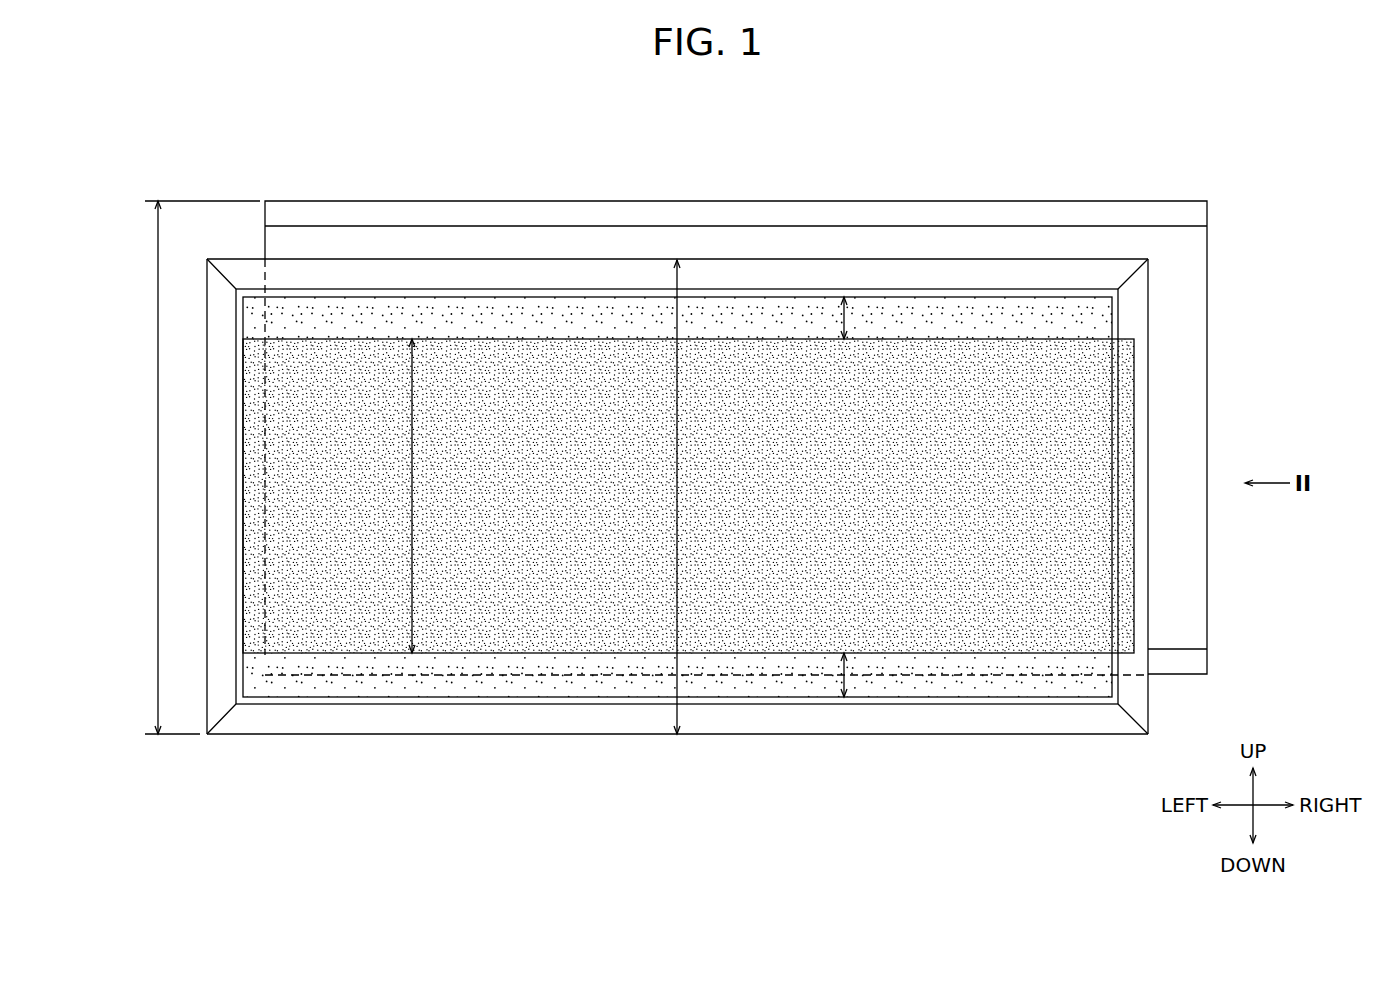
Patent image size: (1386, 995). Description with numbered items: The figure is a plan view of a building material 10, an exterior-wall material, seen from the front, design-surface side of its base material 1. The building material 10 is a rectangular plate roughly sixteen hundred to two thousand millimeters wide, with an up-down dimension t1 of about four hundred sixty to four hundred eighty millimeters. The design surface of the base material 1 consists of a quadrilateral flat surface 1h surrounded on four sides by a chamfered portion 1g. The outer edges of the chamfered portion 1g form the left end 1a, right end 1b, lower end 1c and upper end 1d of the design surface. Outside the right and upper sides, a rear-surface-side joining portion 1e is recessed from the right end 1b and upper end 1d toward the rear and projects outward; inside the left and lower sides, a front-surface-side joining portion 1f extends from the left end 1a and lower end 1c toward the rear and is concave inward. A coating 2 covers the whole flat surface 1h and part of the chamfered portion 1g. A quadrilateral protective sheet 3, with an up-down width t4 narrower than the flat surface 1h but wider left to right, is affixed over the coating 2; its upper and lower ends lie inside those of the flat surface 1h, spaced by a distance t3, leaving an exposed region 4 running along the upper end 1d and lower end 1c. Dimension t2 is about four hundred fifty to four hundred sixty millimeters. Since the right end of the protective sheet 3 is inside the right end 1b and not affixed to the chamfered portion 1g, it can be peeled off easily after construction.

The building material 10 is at (1170, 129).
The base material 1 is at (686, 472).
The left end of the design surface 1a is at (205, 533).
The right end of the design surface 1b is at (1148, 544).
The lower end of the design surface 1c is at (425, 735).
The upper end of the design surface 1d is at (422, 259).
The rear-surface-side joining portion 1e is at (780, 244).
The front-surface-side joining portion 1f is at (227, 634).
The chamfered portion 1g is at (462, 277).
The flat surface 1h is at (618, 680).
The coating 2 is at (535, 320).
The protective sheet 3 is at (955, 430).
The exposed region 4 is at (312, 320).
The up-down dimension t1 is at (195, 467).
The dimension t2 is at (690, 497).
The distance t3 is at (859, 497).
The up-down width of the protective sheet t4 is at (425, 496).